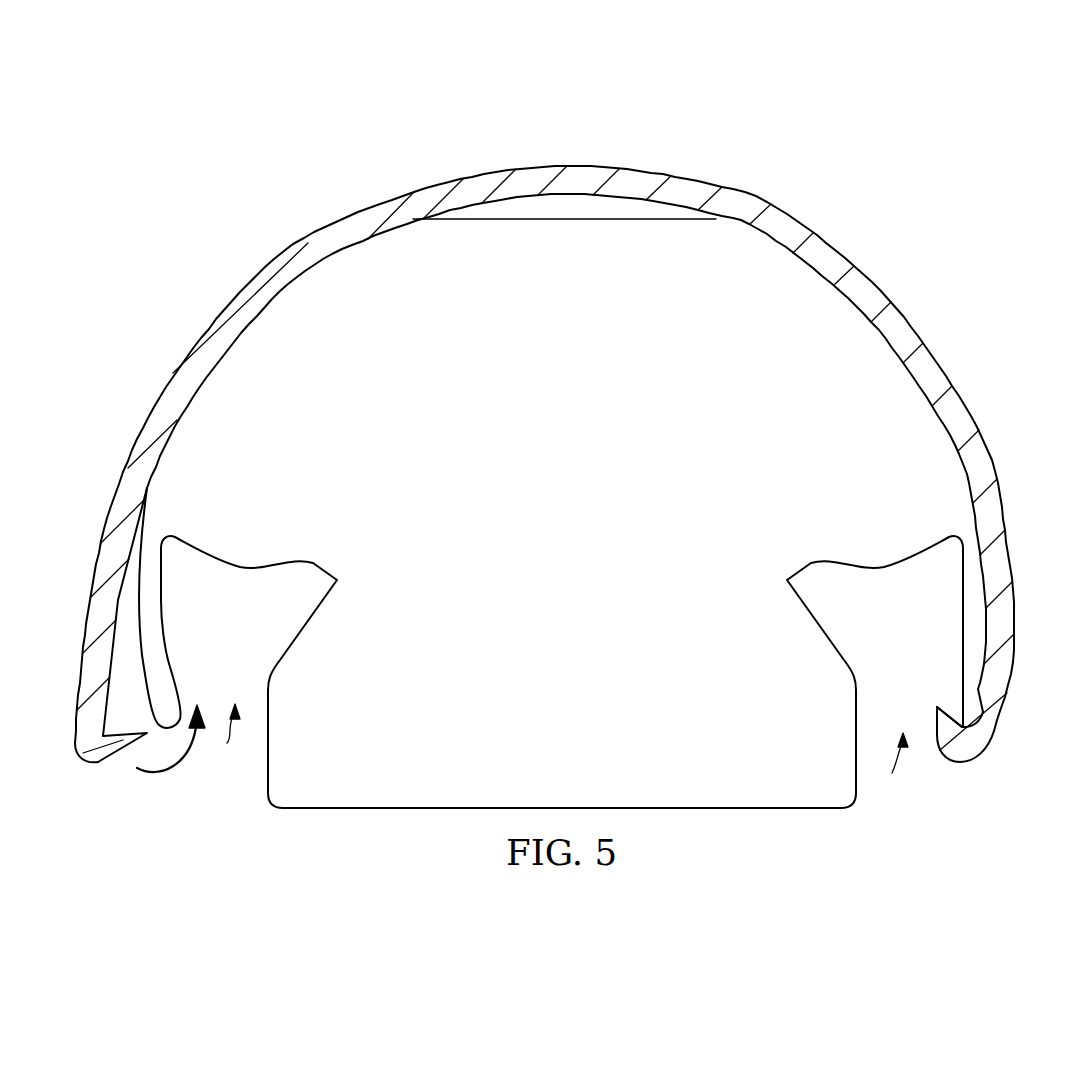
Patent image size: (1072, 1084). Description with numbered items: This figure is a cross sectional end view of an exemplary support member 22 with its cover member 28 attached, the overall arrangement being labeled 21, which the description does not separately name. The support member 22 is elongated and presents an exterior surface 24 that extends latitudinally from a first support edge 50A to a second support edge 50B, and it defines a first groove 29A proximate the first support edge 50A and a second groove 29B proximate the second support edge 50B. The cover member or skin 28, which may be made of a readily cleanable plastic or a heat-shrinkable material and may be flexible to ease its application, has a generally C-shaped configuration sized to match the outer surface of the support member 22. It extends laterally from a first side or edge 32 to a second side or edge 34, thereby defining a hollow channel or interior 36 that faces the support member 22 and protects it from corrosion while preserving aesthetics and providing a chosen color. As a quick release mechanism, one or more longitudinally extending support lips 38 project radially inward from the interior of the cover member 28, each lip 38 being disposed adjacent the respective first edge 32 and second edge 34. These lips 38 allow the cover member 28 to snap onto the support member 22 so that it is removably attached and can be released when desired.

The headband assembly 21 is at (858, 158).
The support member 22 is at (253, 357).
The exterior surface 24 is at (86, 628).
The cover member 28 is at (133, 493).
The hollow channel 36 is at (603, 249).
The first side or edge 32 is at (91, 762).
The second side or edge 34 is at (961, 764).
The support lip 38 is at (122, 744).
The first support edge 50A is at (165, 728).
The second support edge 50B is at (988, 744).
The first groove 29A is at (230, 740).
The second groove 29B is at (895, 771).